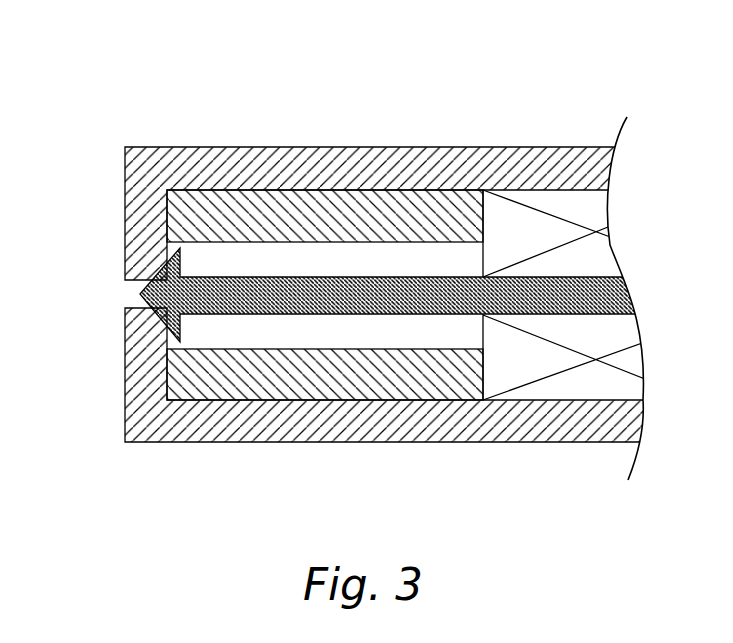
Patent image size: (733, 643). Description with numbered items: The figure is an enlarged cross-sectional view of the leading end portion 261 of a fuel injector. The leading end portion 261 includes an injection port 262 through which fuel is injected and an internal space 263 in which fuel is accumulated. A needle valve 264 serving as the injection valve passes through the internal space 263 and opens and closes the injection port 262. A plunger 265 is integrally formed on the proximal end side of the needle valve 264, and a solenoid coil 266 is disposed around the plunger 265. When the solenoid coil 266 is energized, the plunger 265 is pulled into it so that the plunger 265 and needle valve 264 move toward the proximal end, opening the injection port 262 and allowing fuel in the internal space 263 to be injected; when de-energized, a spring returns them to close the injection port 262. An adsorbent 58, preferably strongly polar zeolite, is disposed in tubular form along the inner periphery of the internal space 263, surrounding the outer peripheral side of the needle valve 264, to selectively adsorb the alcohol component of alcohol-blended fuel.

The leading end portion 261 is at (300, 160).
The adsorbent 58 is at (227, 217).
The internal space 263 is at (392, 262).
The needle valve 264 is at (202, 297).
The injection port 262 is at (125, 303).
The plunger 265 is at (538, 297).
The solenoid coil 266 is at (583, 208).